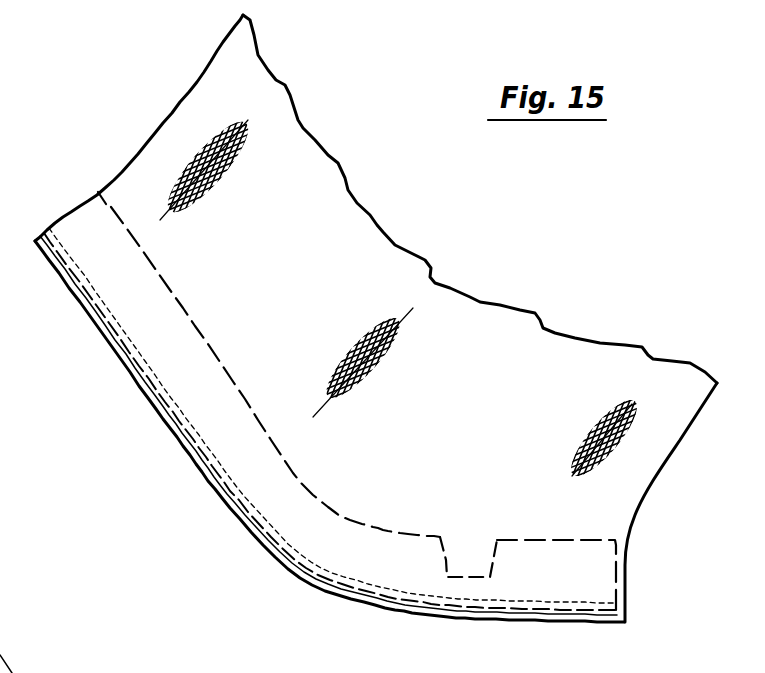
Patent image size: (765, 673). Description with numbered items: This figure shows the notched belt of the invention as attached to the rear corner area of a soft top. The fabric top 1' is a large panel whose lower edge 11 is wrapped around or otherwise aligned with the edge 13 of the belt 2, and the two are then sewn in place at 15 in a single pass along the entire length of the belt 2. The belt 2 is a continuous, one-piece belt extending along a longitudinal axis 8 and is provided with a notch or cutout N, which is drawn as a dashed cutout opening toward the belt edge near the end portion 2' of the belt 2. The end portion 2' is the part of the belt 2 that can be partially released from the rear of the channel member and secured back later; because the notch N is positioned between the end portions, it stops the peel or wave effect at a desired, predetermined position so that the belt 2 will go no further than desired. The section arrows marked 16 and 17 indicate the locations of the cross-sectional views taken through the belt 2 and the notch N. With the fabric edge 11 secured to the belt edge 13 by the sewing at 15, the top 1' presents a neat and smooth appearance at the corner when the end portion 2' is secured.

The fabric top 1' is at (376, 318).
The notched belt 2 is at (244, 364).
The end portion 2' is at (600, 559).
The edge of the fabric top 11 is at (138, 412).
The edge of the belt 13 is at (339, 584).
The sewing 15 is at (122, 337).
The section line 16 is at (542, 497).
The section line 17 is at (447, 492).
The notch N is at (455, 556).
The longitudinal axis 8 is at (80, 665).